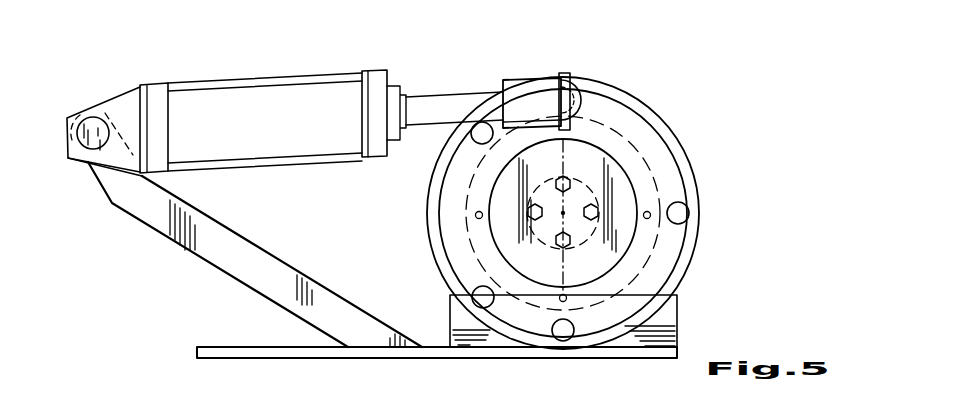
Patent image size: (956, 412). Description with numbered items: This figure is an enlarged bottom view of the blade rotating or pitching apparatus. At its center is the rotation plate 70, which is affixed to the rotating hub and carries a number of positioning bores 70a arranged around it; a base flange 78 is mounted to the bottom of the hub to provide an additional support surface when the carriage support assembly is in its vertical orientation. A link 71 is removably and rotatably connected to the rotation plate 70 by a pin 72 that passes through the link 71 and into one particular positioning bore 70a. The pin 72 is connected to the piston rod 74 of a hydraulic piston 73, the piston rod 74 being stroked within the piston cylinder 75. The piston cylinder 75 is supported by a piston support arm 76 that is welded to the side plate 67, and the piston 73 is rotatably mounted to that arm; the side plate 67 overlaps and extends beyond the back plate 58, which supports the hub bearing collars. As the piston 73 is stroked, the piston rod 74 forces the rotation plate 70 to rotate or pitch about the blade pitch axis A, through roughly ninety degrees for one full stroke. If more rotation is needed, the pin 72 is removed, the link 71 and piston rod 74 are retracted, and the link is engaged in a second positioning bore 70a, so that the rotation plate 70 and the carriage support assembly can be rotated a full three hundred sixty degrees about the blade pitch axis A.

The hydraulic piston 73 is at (352, 60).
The piston cylinder 75 is at (267, 84).
The piston rod 74 is at (450, 98).
The link 71 is at (532, 85).
The pin 72 is at (566, 72).
The rotation plate 70 is at (647, 132).
The positioning bores 70a is at (478, 134).
The base flange 78 is at (647, 178).
The piston support arm 76 is at (278, 260).
The side plate 67 is at (238, 347).
The back plate 58 is at (666, 322).
The blade pitch axis A is at (563, 213).